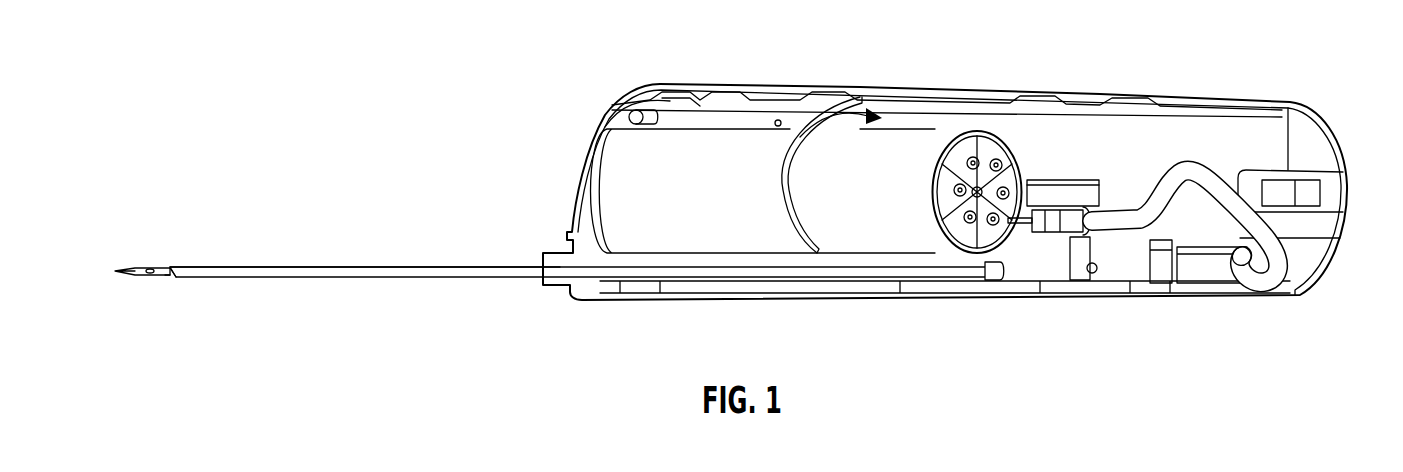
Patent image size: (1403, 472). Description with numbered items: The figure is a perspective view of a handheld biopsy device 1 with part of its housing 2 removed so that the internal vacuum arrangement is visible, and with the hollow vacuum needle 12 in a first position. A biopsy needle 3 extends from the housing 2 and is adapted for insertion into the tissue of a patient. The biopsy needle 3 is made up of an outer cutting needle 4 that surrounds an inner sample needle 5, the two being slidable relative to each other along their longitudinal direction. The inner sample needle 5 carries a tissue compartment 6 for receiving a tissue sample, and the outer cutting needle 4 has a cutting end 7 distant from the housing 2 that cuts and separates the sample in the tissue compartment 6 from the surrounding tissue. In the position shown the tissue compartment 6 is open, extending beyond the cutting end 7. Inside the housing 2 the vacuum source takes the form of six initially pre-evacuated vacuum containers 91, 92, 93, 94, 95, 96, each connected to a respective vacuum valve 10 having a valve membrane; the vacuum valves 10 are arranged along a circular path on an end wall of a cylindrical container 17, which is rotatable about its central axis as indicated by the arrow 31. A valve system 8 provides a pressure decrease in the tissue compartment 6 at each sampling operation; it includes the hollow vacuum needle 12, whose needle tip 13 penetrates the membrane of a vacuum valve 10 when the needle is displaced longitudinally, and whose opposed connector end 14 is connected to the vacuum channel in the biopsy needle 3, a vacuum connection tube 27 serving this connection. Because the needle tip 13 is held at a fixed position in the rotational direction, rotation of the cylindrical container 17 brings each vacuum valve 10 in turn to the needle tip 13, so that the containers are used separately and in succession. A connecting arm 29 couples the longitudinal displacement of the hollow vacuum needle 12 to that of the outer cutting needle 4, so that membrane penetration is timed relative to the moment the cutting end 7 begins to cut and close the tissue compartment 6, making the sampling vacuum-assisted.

The biopsy device 1 is at (343, 73).
The housing 2 is at (1232, 101).
The biopsy needle 3 is at (392, 280).
The outer cutting needle 4 is at (355, 265).
The inner sample needle 5 is at (145, 275).
The tissue compartment 6 is at (160, 266).
The cutting end 7 is at (172, 278).
The valve system 8 is at (1053, 165).
The initially pre-evacuated vacuum container 91 is at (964, 230).
The initially pre-evacuated vacuum container 92 is at (952, 190).
The initially pre-evacuated vacuum container 93 is at (968, 156).
The initially pre-evacuated vacuum container 94 is at (986, 157).
The initially pre-evacuated vacuum container 95 is at (1008, 183).
The initially pre-evacuated vacuum container 96 is at (996, 232).
The vacuum valve 10 is at (957, 215).
The hollow vacuum needle 12 is at (1062, 234).
The needle tip 13 is at (1022, 236).
The connector end 14 is at (1032, 200).
The cylindrical container 17 is at (731, 165).
The vacuum connection tube 27 is at (1245, 210).
The connecting arm 29 is at (1107, 254).
The arrow indicating rotation 31 is at (783, 203).